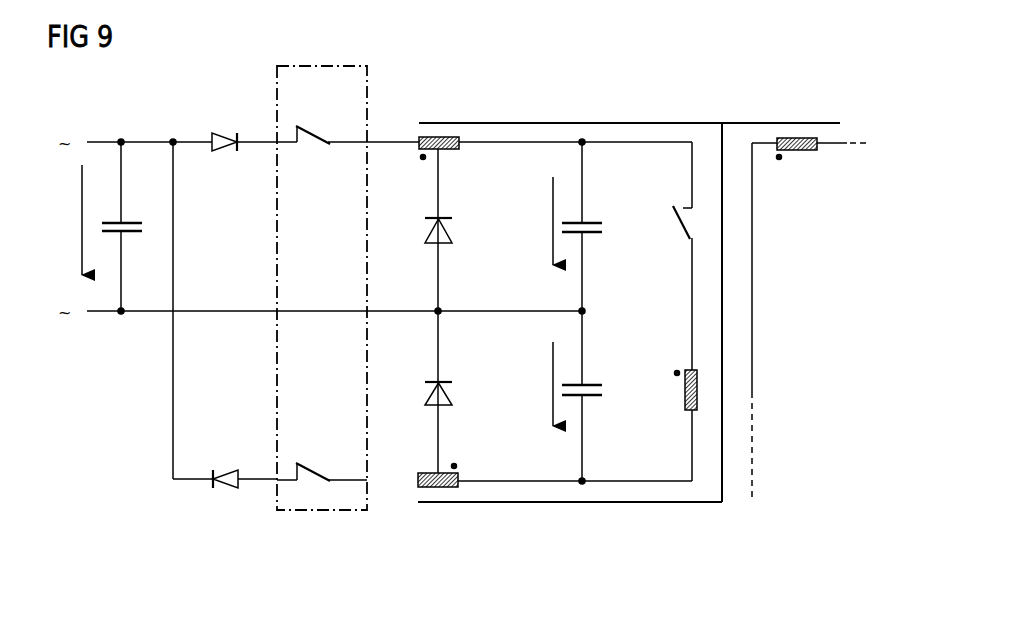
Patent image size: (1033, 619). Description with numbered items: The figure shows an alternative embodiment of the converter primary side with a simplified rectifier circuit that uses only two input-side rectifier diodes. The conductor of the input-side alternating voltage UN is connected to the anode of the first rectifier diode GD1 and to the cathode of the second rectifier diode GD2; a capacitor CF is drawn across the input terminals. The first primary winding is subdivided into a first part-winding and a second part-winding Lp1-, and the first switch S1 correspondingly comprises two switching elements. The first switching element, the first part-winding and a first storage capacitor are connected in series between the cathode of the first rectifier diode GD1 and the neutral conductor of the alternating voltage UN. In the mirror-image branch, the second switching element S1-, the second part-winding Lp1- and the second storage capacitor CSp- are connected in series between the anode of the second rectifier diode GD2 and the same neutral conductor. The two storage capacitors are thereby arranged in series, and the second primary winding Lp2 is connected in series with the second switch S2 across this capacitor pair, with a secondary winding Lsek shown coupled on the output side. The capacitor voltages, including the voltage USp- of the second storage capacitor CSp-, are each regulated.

The input-side alternating voltage UN is at (64, 220).
The filter capacitor CF is at (130, 221).
The first rectifier diode GD1 is at (225, 137).
The second rectifier diode GD2 is at (224, 473).
The first switch S1 is at (348, 322).
The second switching element S1- is at (316, 470).
The second part-winding Lp1- is at (426, 472).
The voltage of the second storage capacitor USp- is at (522, 384).
The second storage capacitor CSp- is at (592, 383).
The second switch S2 is at (680, 224).
The second primary winding Lp2 is at (684, 393).
The secondary inductance Lsek is at (795, 152).